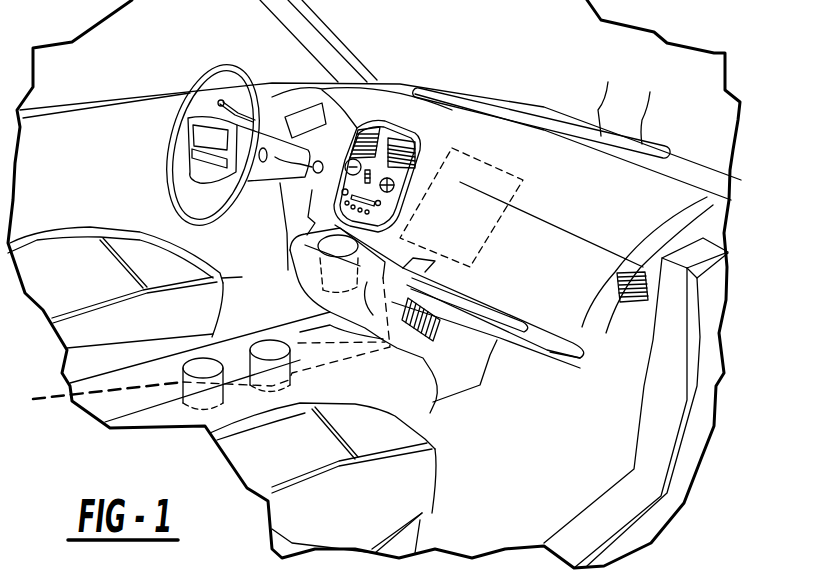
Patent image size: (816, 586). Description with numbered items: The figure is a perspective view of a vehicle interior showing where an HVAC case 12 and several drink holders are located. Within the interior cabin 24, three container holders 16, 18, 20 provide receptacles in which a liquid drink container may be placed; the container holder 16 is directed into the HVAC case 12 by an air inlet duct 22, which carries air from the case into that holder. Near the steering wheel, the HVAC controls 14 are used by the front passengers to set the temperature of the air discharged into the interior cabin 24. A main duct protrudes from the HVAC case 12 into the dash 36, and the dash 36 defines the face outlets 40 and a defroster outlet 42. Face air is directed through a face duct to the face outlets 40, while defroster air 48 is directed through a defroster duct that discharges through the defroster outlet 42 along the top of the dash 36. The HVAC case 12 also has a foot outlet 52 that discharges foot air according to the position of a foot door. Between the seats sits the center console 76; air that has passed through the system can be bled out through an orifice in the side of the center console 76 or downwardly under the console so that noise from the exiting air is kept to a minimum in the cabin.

The HVAC case 12 is at (477, 160).
The HVAC controls 14 is at (317, 187).
The container holder 16 is at (283, 343).
The container holder 18 is at (36, 399).
The container holder 20 is at (320, 280).
The air inlet duct 22 is at (349, 363).
The interior cabin 24 is at (179, 50).
The dash 36 is at (609, 203).
The face outlets 40 is at (405, 149).
The defroster outlet 42 is at (667, 157).
The defroster air 48 is at (647, 110).
The foot outlet 52 is at (433, 337).
The center console 76 is at (423, 408).